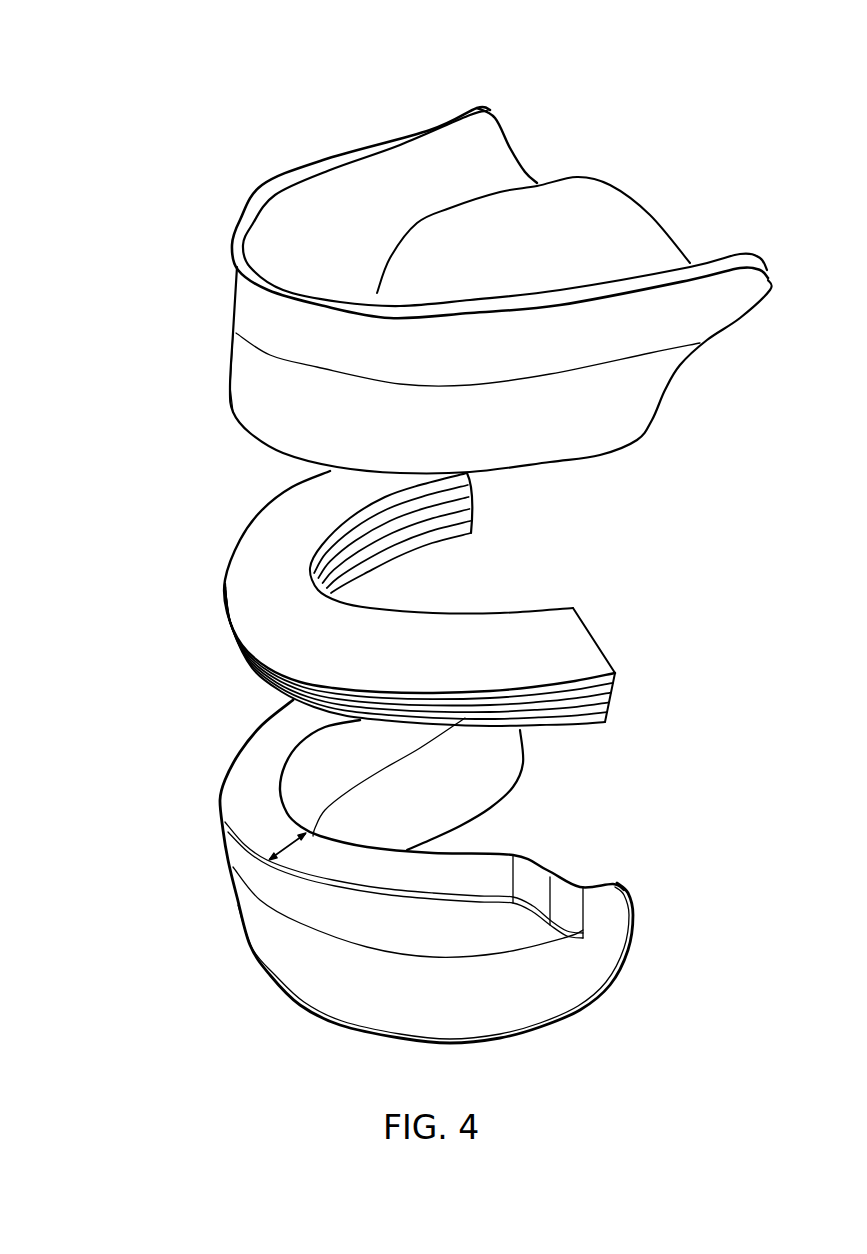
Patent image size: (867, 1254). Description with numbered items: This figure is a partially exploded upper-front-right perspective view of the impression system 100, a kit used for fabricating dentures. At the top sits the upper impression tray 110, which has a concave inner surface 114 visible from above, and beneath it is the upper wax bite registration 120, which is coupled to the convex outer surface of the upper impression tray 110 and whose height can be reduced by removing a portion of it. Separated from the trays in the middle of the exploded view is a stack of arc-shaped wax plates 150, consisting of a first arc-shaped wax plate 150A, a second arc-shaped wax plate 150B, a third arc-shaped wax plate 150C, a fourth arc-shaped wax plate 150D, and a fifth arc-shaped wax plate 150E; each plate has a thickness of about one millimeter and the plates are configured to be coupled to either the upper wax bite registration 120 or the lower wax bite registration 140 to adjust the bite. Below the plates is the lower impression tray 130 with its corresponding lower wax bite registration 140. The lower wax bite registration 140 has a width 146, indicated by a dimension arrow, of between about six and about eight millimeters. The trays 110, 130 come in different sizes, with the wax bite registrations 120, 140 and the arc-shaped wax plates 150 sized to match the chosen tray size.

The impression system 100 is at (709, 59).
The upper impression tray 110 is at (236, 250).
The concave inner surface 114 is at (453, 130).
The upper wax bite registration 120 is at (248, 410).
The arc-shaped wax plates 150 is at (331, 598).
The first arc-shaped wax plate 150A is at (221, 608).
The second arc-shaped wax plate 150B is at (224, 630).
The third arc-shaped wax plate 150C is at (231, 648).
The fourth arc-shaped wax plate 150D is at (241, 668).
The fifth arc-shaped wax plate 150E is at (278, 693).
The lower impression tray 130 is at (258, 945).
The lower wax bite registration 140 is at (232, 798).
The width of the lower wax bite registration 146 is at (268, 860).